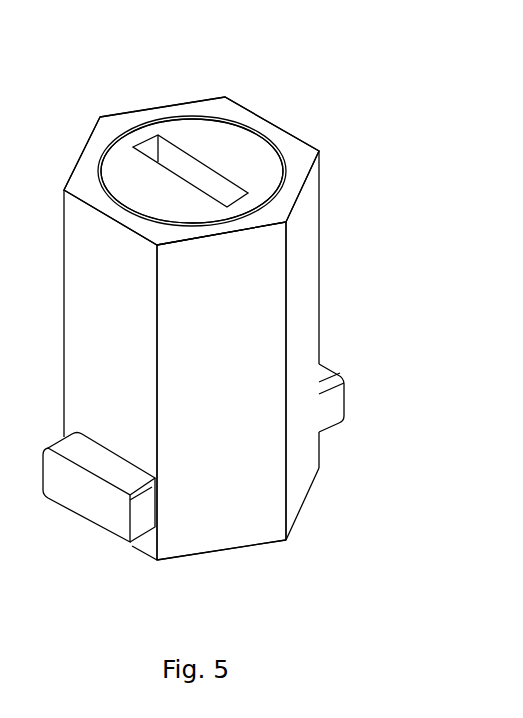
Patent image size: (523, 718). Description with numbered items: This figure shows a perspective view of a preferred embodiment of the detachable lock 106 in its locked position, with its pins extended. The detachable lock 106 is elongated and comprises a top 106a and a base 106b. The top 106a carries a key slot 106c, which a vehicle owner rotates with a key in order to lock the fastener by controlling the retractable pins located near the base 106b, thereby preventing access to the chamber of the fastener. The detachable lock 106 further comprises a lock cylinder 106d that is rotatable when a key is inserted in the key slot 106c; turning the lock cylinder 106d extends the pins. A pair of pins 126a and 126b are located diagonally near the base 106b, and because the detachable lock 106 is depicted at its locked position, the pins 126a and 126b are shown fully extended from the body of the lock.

The detachable lock 106 is at (325, 112).
The top 106a is at (298, 150).
The base 106b is at (221, 391).
The key slot 106c is at (147, 142).
The lock cylinder 106d is at (208, 140).
The pin 126a is at (75, 500).
The pin 126b is at (333, 422).